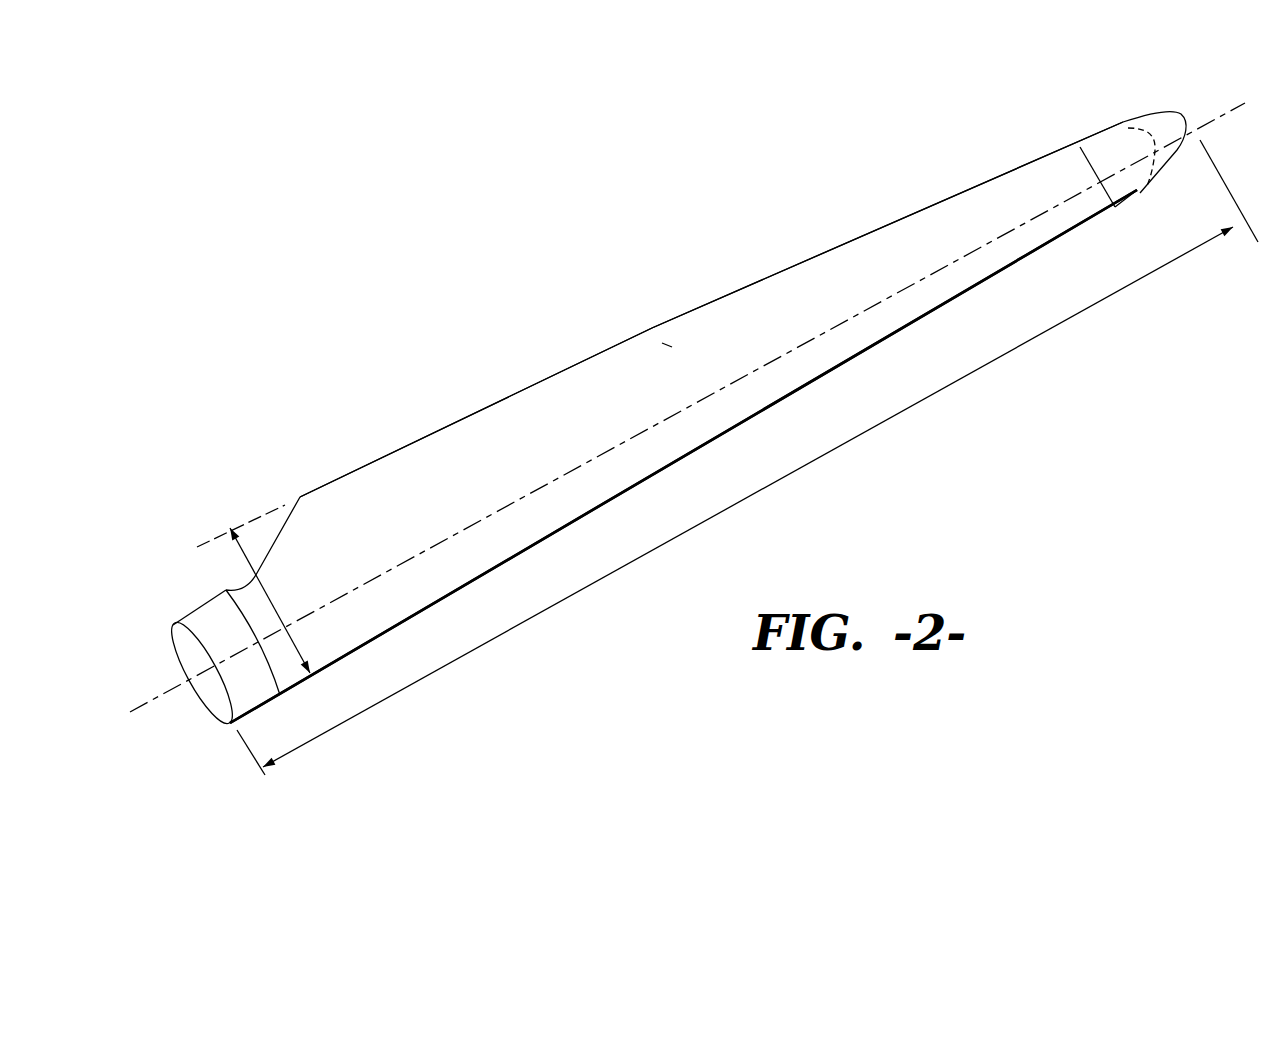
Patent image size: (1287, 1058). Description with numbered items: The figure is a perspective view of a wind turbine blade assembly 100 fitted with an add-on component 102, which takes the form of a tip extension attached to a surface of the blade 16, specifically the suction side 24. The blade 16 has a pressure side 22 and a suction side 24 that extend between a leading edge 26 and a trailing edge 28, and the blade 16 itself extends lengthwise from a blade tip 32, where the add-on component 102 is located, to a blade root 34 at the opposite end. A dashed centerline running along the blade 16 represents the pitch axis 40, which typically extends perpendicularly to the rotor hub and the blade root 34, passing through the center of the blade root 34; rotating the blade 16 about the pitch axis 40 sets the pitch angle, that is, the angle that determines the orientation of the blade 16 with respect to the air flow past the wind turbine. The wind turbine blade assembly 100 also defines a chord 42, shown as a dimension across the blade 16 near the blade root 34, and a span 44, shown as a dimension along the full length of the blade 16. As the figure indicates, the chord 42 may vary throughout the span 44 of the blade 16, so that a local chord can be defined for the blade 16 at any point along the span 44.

The wind turbine blade assembly 100 is at (461, 256).
The blade 16 is at (472, 400).
The pressure side 22 is at (652, 328).
The suction side 24 is at (390, 483).
The leading edge 26 is at (423, 610).
The trailing edge 28 is at (312, 488).
The blade tip 32 is at (1140, 190).
The blade root 34 is at (218, 694).
The pitch axis 40 is at (528, 488).
The chord 42 is at (226, 590).
The span 44 is at (780, 480).
The add-on component 102 is at (1158, 127).